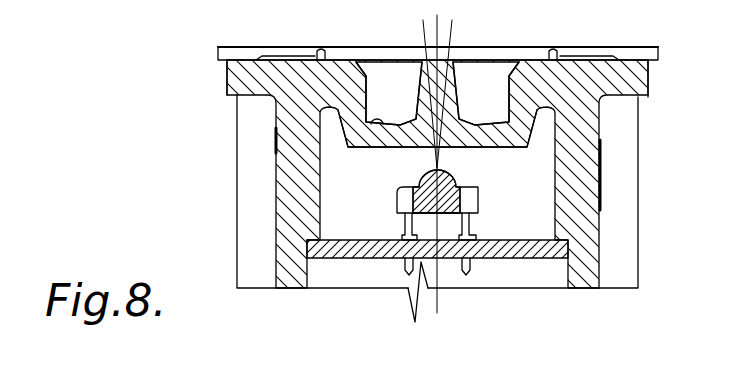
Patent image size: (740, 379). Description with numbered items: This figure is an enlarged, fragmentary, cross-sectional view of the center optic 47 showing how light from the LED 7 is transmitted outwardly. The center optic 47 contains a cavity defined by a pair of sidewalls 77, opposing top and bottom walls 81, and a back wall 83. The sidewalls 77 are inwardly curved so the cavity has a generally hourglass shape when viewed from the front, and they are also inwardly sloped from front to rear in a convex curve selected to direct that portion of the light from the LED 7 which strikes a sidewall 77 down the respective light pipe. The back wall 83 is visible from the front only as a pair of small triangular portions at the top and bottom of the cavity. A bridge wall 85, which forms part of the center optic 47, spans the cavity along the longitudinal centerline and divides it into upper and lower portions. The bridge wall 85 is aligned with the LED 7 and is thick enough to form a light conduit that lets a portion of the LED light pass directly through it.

The center optic 47 is at (542, 23).
The sidewalls 77 is at (470, 68).
The top and bottom walls 81 is at (362, 103).
The back wall 83 is at (367, 129).
The bridge wall 85 is at (428, 68).
The LED 7 is at (480, 197).